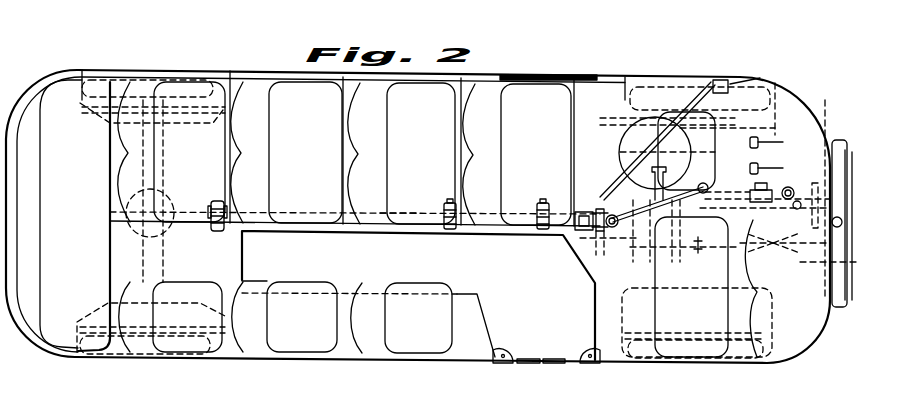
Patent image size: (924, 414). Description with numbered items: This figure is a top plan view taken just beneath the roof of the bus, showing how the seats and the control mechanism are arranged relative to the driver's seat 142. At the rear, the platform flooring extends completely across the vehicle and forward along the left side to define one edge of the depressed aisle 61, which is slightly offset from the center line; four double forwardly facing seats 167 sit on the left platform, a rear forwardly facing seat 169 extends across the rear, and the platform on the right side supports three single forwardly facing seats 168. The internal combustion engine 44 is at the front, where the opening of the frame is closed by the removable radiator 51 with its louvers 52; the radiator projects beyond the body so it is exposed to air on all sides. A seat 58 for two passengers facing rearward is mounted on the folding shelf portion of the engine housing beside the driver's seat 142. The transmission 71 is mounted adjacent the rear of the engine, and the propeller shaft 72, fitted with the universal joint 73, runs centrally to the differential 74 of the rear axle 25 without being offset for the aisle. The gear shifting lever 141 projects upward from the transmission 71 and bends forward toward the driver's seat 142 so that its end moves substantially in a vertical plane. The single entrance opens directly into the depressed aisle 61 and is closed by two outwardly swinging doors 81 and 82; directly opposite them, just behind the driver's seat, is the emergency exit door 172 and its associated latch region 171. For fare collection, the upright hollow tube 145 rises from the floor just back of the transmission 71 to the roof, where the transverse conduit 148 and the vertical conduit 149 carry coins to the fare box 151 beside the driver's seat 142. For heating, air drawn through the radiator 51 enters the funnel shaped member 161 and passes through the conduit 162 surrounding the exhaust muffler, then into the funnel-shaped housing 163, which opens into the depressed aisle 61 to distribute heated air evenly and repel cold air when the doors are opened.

The rear axle 25 is at (158, 161).
The internal combustion engine 44 is at (742, 236).
The radiator 51 is at (836, 146).
The louvers 52 is at (852, 217).
The seat 58 is at (744, 270).
The depressed aisle 61 is at (418, 295).
The transmission 71 is at (600, 243).
The propeller shaft 72 is at (400, 213).
The universal joint 73 is at (238, 207).
The differential 74 is at (218, 203).
The outwardly swinging door 81 is at (563, 361).
The outwardly swinging door 82 is at (527, 364).
The gear shifting lever 141 is at (672, 190).
The driver's seat 142 is at (677, 137).
The upright tube 145 is at (601, 207).
The transverse conduit 148 is at (633, 160).
The vertical conduit 149 is at (721, 80).
The fare box 151 is at (745, 81).
The funnel shaped member 161 is at (857, 263).
The conduit 162 is at (715, 249).
The funnel-shaped housing 163 is at (579, 262).
The double forwardly facing seat 167 is at (180, 135).
The single forwardly facing seat 168 is at (212, 305).
The rear forwardly facing seat 169 is at (108, 170).
The panel 171 is at (545, 8).
The emergency exit door 172 is at (548, 59).